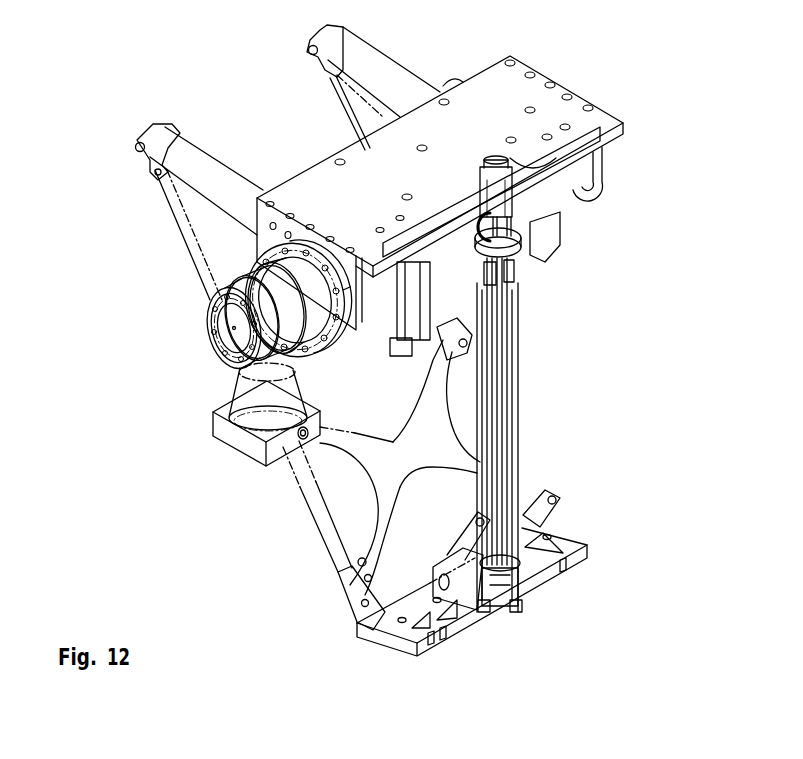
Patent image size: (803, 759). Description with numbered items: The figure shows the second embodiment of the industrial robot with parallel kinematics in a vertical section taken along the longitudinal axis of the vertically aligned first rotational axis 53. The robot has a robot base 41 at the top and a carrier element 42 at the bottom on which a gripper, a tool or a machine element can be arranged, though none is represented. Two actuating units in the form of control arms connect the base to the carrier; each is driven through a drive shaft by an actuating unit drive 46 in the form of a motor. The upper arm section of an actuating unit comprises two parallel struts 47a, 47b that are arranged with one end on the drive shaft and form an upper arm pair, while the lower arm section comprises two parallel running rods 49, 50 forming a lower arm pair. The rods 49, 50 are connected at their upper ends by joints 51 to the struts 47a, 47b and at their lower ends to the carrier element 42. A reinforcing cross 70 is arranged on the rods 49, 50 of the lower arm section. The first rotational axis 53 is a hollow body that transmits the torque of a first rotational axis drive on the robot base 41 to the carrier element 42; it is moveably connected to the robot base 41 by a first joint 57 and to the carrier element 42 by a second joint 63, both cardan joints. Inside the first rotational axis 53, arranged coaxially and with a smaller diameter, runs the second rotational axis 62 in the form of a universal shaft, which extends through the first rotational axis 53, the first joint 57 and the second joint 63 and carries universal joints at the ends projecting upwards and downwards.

The robot base 41 is at (548, 98).
The carrier element 42 is at (400, 630).
The actuating unit drive 46 is at (240, 393).
The strut 47a is at (377, 68).
The strut 47b is at (190, 160).
The rod 49 is at (187, 237).
The rod 50 is at (348, 107).
The joint 51 is at (137, 150).
The first rotational axis 53 is at (517, 342).
The first joint 57 is at (516, 275).
The second rotational axis 62 is at (498, 393).
The second joint 63 is at (524, 574).
The reinforcing cross 70 is at (393, 468).